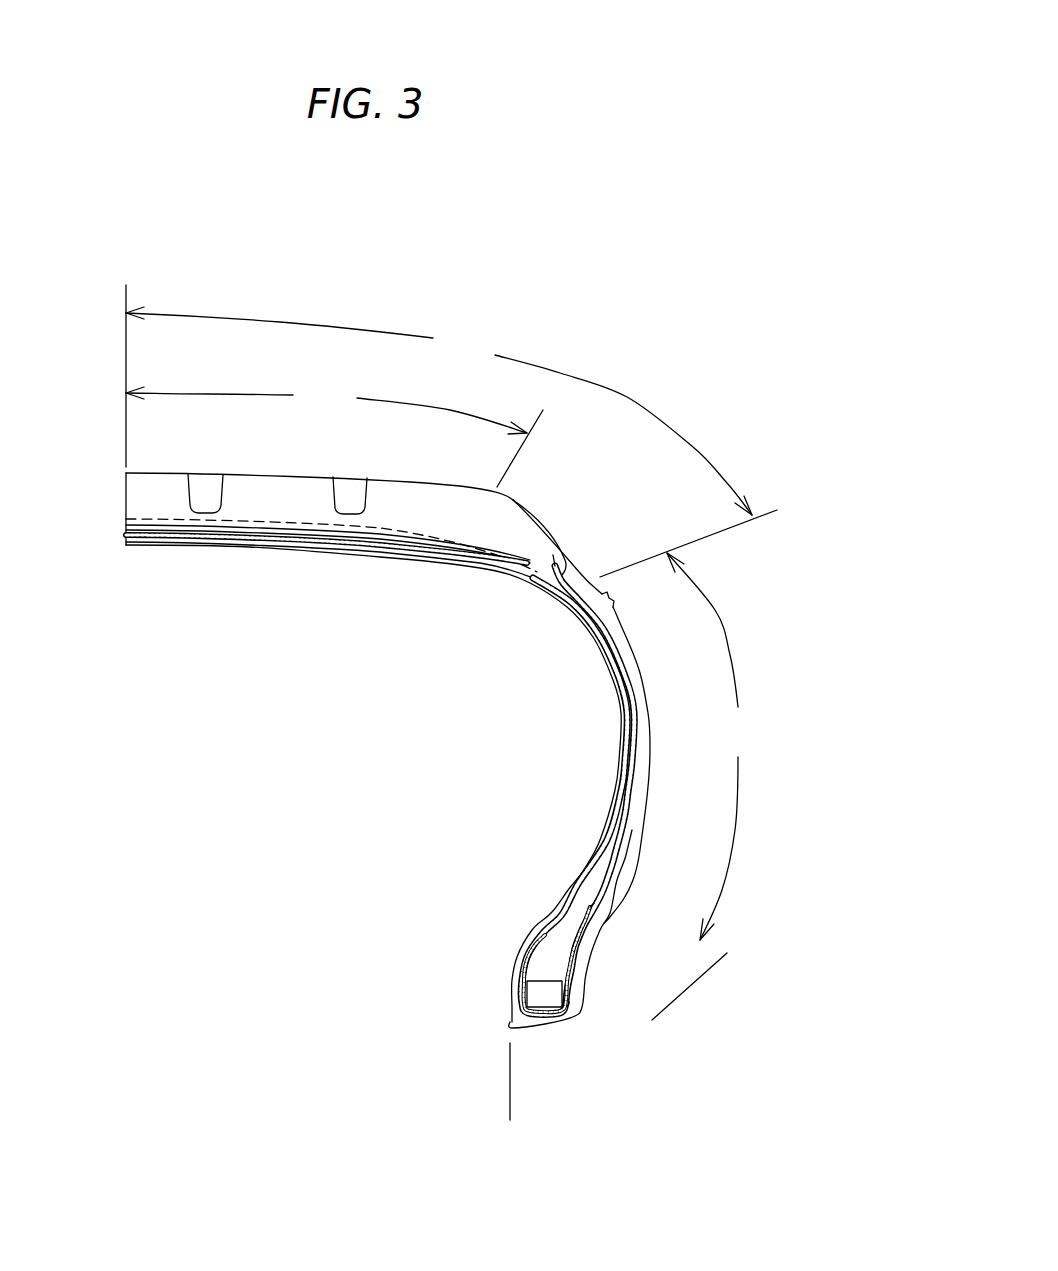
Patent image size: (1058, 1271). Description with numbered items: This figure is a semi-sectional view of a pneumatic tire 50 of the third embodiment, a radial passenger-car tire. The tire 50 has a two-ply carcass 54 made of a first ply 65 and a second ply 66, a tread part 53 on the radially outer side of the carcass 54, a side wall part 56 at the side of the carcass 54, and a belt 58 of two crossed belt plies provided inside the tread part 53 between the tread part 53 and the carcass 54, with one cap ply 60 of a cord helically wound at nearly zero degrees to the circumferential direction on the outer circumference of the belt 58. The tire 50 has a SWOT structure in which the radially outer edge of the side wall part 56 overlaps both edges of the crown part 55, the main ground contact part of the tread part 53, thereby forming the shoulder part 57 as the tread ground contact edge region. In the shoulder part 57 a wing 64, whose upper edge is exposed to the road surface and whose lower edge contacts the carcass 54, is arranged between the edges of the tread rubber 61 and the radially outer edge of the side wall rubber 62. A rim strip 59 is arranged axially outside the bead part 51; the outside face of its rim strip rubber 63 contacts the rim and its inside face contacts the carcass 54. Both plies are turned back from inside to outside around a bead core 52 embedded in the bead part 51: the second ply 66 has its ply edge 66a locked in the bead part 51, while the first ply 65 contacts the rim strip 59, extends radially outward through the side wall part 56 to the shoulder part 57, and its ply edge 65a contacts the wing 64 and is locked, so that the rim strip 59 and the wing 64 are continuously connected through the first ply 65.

The tire 50 is at (648, 229).
The bead part 51 is at (512, 1108).
The bead core 52 is at (542, 997).
The tread part 53 is at (439, 400).
The carcass 54 is at (623, 737).
The crown part 55 is at (326, 404).
The side wall part 56 is at (704, 786).
The shoulder part 57 is at (528, 433).
The belt 58 is at (310, 528).
The rim strip 59 is at (634, 920).
The cap ply 60 is at (402, 525).
The tread rubber 61 is at (263, 497).
The side wall rubber 62 is at (640, 680).
The rim strip rubber 63 is at (597, 958).
The wing 64 is at (548, 562).
The first ply 65 is at (632, 833).
The ply edge 65a is at (537, 575).
The second ply 66 is at (545, 937).
The ply edge 66a is at (598, 910).